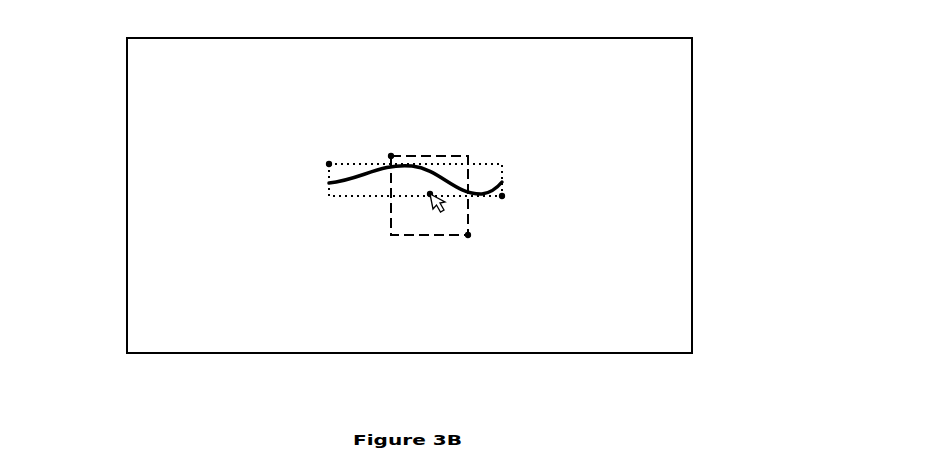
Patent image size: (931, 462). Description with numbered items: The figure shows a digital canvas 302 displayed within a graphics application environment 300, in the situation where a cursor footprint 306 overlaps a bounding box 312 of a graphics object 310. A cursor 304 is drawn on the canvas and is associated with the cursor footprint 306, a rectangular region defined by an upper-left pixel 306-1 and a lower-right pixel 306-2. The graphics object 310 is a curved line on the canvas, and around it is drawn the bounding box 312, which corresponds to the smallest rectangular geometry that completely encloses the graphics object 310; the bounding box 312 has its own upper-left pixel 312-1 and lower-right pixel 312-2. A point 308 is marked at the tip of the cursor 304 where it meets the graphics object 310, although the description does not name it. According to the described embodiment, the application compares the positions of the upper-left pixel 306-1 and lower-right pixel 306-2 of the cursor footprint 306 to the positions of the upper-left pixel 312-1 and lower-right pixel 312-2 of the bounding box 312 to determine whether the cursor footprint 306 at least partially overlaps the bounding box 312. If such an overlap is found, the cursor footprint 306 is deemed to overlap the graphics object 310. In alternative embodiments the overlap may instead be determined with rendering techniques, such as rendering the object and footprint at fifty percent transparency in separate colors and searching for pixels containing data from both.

The graphics application environment 300 is at (720, 98).
The digital canvas 302 is at (127, 148).
The cursor 304 is at (443, 211).
The cursor footprint 306 is at (391, 222).
The upper-left pixel 306-1 is at (391, 156).
The lower-right pixel 306-2 is at (468, 235).
The selection point 308 is at (430, 194).
The graphics object 310 is at (490, 193).
The bounding box 312 is at (330, 173).
The upper-left pixel 312-1 is at (329, 164).
The lower-right pixel 312-2 is at (502, 196).